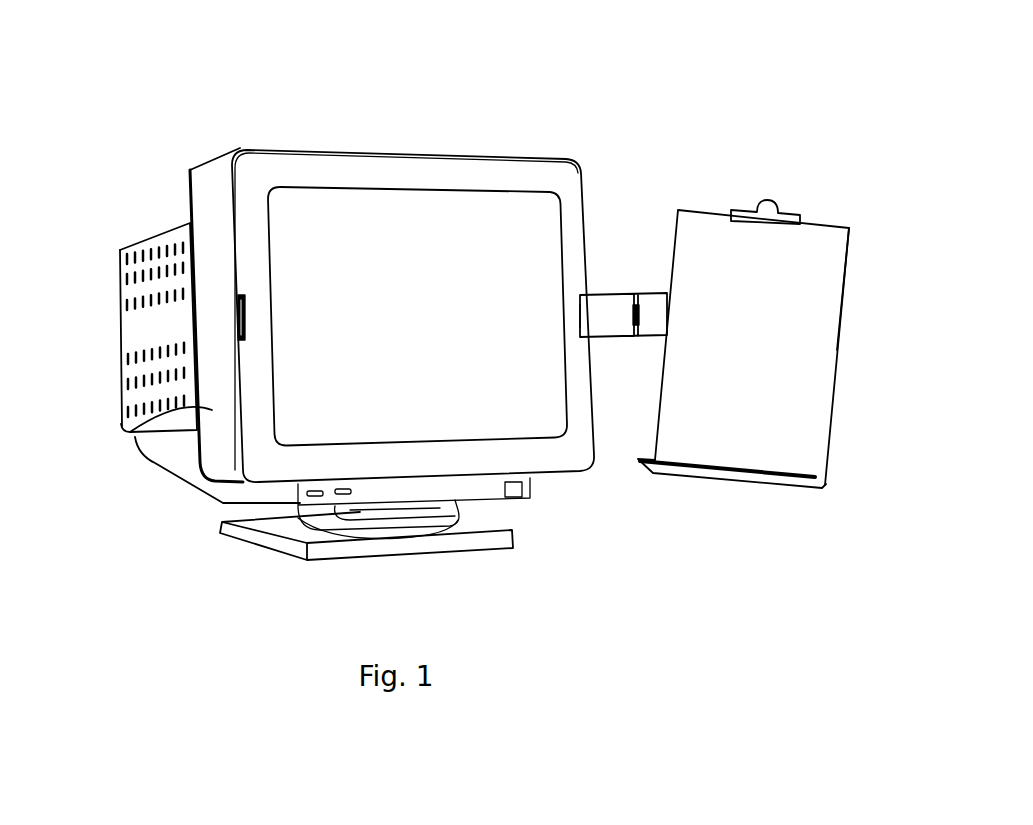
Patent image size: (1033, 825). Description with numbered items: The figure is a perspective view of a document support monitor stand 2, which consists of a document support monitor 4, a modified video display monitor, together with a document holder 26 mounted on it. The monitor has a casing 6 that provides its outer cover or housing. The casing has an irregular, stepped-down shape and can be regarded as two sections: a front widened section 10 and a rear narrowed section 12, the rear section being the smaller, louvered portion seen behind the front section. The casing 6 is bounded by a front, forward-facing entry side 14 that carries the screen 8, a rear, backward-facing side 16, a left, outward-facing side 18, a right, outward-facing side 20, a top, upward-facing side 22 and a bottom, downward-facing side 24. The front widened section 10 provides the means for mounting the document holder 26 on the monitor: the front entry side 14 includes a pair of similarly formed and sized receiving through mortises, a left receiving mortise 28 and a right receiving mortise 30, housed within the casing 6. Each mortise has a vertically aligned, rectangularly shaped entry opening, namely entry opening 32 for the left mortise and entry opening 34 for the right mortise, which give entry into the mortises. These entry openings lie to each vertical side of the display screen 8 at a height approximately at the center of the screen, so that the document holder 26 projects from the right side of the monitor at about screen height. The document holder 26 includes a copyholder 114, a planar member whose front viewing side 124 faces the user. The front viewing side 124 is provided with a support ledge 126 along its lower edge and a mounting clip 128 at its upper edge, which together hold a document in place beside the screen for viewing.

The document support monitor stand 2 is at (652, 90).
The document support monitor 4 is at (612, 210).
The casing 6 is at (145, 199).
The screen 8 is at (537, 207).
The front widened section 10 is at (425, 181).
The rear narrowed section 12 is at (142, 338).
The front entry side 14 is at (510, 167).
The rear side 16 is at (120, 294).
The left side 18 is at (130, 432).
The right side 20 is at (596, 421).
The top side 22 is at (305, 144).
The bottom side 24 is at (243, 492).
The document holder 26 is at (692, 182).
The left receiving mortise 28 is at (258, 309).
The right receiving mortise 30 is at (565, 317).
The entry opening 32 is at (246, 328).
The entry opening 34 is at (573, 351).
The copyholder 114 is at (858, 290).
The front viewing side 124 is at (790, 368).
The support ledge 126 is at (790, 471).
The mounting clip 128 is at (763, 206).